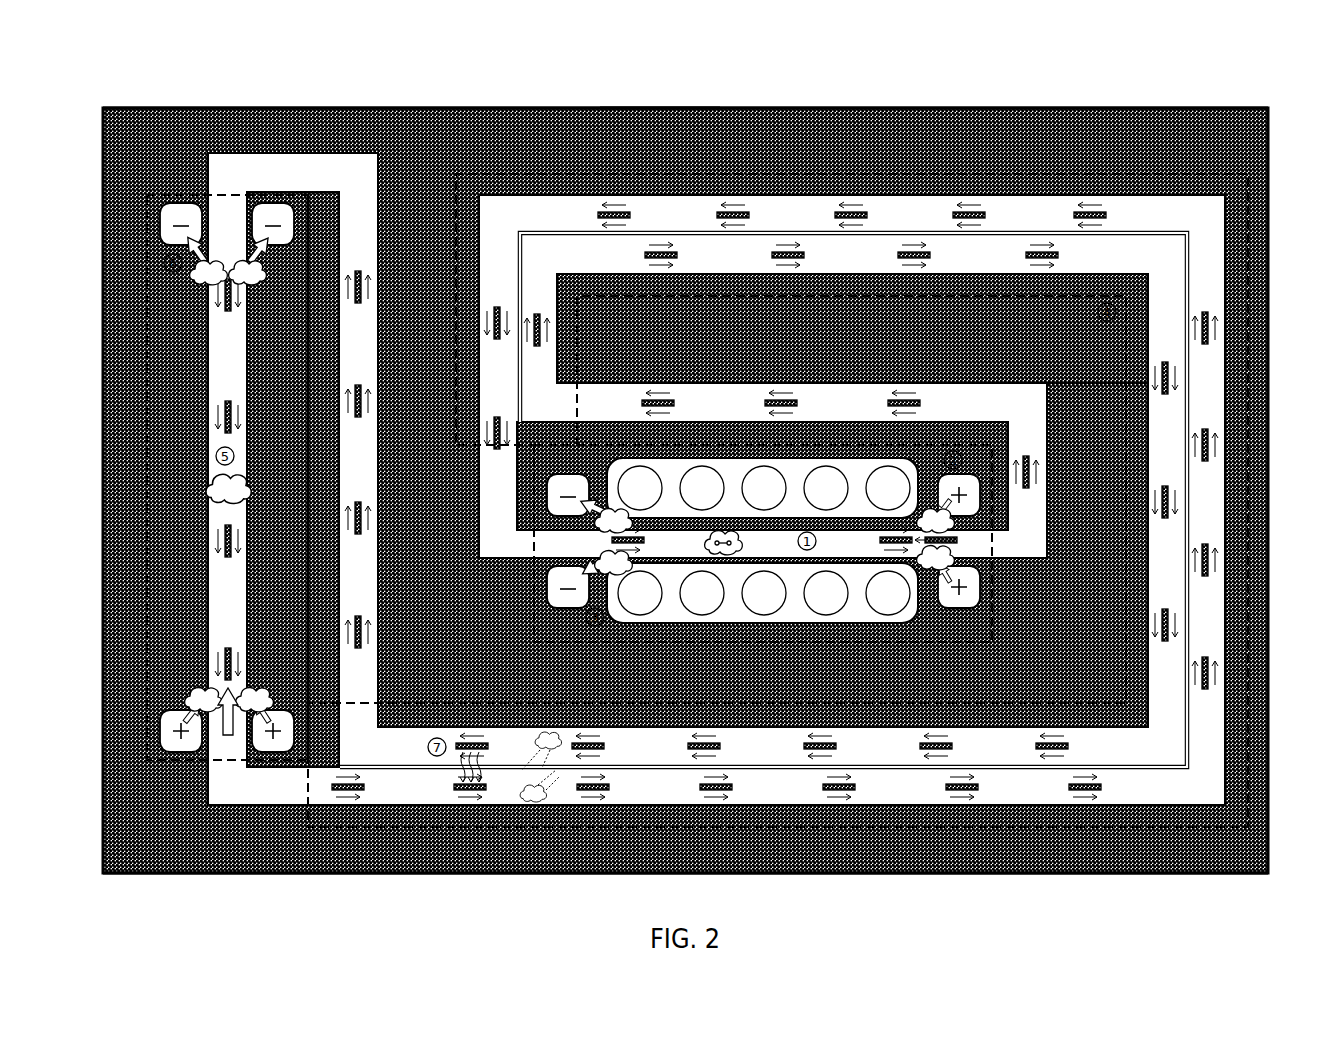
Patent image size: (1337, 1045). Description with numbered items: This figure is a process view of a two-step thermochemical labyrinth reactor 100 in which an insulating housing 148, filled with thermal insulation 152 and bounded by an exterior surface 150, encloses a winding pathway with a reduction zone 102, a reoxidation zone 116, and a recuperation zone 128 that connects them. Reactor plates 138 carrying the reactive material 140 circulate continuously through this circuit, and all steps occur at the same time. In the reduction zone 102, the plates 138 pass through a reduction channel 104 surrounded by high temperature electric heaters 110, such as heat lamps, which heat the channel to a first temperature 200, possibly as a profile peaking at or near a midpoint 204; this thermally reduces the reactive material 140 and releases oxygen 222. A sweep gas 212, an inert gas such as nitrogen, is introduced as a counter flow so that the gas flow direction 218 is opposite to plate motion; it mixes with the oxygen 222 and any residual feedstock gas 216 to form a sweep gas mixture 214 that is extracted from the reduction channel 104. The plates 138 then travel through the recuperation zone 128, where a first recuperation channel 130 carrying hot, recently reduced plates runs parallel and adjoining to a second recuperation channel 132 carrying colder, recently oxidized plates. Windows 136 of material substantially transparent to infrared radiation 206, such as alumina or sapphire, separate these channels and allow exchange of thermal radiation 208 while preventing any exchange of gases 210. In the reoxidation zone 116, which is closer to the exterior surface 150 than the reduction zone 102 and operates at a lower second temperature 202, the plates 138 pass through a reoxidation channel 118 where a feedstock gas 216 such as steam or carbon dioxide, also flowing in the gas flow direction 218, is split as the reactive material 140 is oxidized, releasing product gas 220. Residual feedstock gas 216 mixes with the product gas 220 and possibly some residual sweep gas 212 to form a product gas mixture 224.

The two-step thermochemical labyrinth reactor 100 is at (1236, 96).
The reduction zone 102 is at (535, 617).
The reduction channel 104 is at (870, 548).
The high temperature electric heaters 110 is at (632, 607).
The reoxidation zone 116 is at (147, 370).
The reoxidation channel 118 is at (225, 623).
The recuperation zone 128 is at (848, 835).
The first recuperation channel 130 is at (543, 290).
The second recuperation channel 132 is at (490, 365).
The windows 136 is at (1120, 768).
The reactor plates 138 is at (868, 207).
The reactive material 140 is at (980, 208).
The insulating housing 148 is at (660, 86).
The exterior surface 150 is at (499, 108).
The thermal insulation 152 is at (248, 840).
The first temperature 200 is at (643, 607).
The second temperature 202 is at (247, 340).
The midpoint 204 is at (753, 540).
The infrared radiation 206 is at (480, 757).
The thermal radiation 208 is at (440, 779).
The gases 210 is at (554, 790).
The sweep gas 212 is at (935, 573).
The sweep gas mixture 214 is at (598, 555).
The feedstock gas 216 is at (203, 695).
The gas flow direction 218 is at (232, 745).
The product gas 220 is at (212, 480).
The oxygen 222 is at (676, 555).
The product gas mixture 224 is at (262, 272).